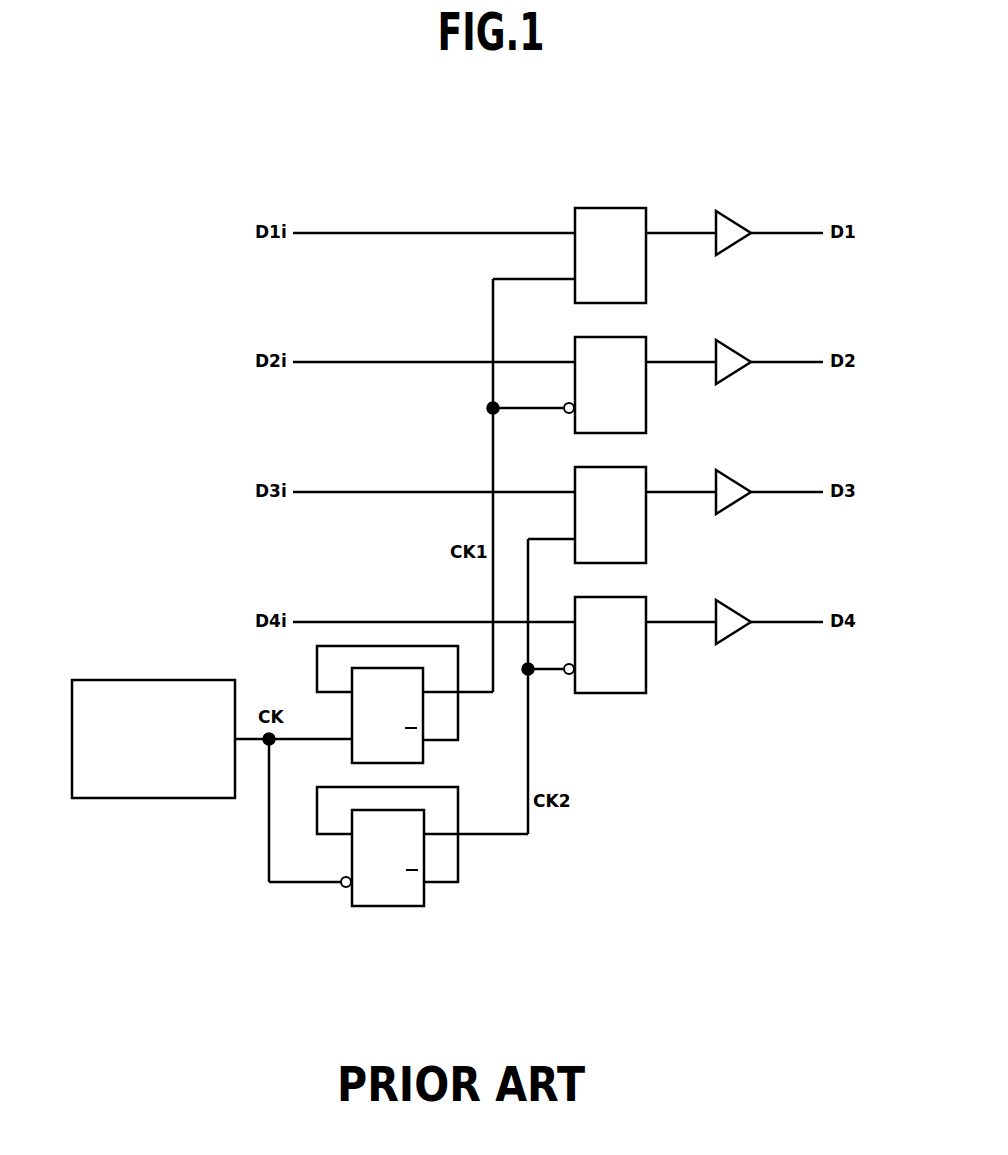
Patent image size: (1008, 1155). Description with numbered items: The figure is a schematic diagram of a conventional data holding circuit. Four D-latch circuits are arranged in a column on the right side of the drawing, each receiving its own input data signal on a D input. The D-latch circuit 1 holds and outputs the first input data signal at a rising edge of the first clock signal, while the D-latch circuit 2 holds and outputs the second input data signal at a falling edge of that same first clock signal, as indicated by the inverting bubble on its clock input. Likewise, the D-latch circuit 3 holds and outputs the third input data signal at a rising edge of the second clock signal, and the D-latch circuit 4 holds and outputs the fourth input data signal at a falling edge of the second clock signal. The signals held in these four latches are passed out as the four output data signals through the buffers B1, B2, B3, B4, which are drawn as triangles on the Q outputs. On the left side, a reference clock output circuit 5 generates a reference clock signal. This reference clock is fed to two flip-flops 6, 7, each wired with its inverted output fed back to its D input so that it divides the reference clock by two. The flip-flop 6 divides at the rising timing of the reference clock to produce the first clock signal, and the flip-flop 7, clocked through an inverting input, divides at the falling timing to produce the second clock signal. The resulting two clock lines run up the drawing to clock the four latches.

The D-latch circuit 1 is at (646, 287).
The D-latch circuit 2 is at (646, 418).
The D-latch circuit 3 is at (646, 548).
The D-latch circuit 4 is at (646, 678).
The buffer B1 is at (733, 244).
The buffer B2 is at (735, 375).
The buffer B3 is at (735, 503).
The buffer B4 is at (735, 645).
The reference clock output circuit 5 is at (163, 798).
The flip-flop 6 is at (423, 752).
The flip-flop 7 is at (424, 906).